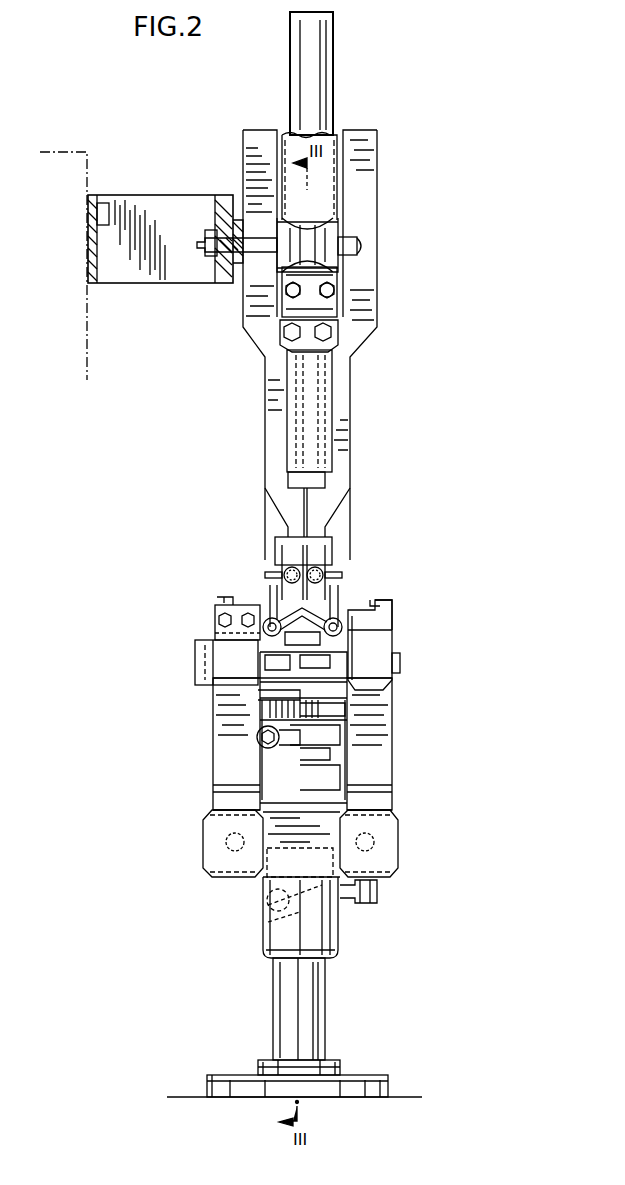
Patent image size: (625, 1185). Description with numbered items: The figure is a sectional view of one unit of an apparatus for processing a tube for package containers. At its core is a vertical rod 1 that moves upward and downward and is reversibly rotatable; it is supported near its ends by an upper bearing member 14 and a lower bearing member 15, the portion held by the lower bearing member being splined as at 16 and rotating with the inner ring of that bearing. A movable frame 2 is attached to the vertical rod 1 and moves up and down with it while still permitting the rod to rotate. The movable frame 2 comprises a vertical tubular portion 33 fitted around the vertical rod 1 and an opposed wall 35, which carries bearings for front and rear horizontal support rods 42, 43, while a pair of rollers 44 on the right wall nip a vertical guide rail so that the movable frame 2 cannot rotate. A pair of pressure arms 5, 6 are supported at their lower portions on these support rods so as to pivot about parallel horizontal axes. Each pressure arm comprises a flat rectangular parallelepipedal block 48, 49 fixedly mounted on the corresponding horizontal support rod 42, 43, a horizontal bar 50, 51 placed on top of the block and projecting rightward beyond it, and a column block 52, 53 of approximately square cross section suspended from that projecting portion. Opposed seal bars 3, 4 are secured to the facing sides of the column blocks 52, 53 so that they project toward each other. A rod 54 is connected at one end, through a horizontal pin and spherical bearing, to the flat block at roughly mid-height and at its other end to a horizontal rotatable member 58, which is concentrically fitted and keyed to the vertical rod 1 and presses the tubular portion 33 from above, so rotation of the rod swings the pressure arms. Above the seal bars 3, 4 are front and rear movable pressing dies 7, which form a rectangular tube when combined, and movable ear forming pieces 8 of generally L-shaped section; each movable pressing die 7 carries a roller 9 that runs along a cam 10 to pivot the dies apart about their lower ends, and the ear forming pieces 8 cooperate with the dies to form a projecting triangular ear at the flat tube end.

The vertical rod 1 is at (327, 1028).
The movable frame 2 is at (403, 620).
The seal bar 3 is at (297, 680).
The seal bar 4 is at (350, 703).
The pressure arm 5 is at (196, 787).
The pressure arm 6 is at (400, 796).
The movable pressing die 7 is at (270, 592).
The movable ear forming piece 8 is at (310, 637).
The roller 9 is at (280, 560).
The cam 10 is at (353, 438).
The upper bearing member 14 is at (350, 213).
The lower bearing member 15 is at (260, 1060).
The splined portion 16 is at (277, 1015).
The vertical tubular portion 33 is at (338, 942).
The opposed wall 35 is at (397, 876).
The horizontal support rod 42 is at (222, 845).
The horizontal support rod 43 is at (383, 842).
The roller 44 is at (262, 926).
The flat rectangular parallelepipedal block 48 is at (217, 756).
The flat rectangular parallelepipedal block 49 is at (392, 747).
The horizontal bar 50 is at (217, 631).
The horizontal bar 51 is at (393, 620).
The column block 52 is at (227, 690).
The column block 53 is at (382, 648).
The rod 54 is at (302, 750).
The horizontal rotatable member 58 is at (330, 722).